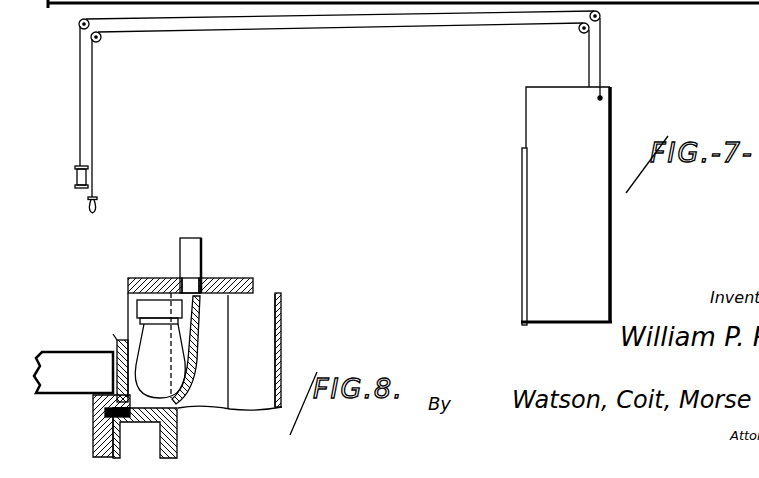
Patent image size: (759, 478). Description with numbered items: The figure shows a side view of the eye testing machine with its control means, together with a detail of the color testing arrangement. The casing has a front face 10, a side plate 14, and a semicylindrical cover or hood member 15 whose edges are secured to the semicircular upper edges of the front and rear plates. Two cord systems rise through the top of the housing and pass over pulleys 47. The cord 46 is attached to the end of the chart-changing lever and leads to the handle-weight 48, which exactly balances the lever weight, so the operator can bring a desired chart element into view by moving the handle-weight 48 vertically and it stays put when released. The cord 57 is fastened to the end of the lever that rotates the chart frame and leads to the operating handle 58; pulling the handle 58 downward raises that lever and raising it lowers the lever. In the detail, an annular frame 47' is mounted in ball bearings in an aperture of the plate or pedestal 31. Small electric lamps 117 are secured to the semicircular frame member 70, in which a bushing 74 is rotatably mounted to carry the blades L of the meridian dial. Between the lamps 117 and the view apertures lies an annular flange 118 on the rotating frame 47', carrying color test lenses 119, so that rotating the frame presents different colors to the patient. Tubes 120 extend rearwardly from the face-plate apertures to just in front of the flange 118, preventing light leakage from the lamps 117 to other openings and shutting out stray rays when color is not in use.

In FIG. 7, the cord 57 is at (325, 31).
In FIG. 7, the handle-weight 48 is at (73, 178).
In FIG. 7, the operating handle 58 is at (99, 203).
In FIG. 7, the pulleys 47 is at (612, 20).
In FIG. 7, the cord 46 is at (601, 57).
In FIG. 7, the semicylindrical cover or hood member 15 is at (540, 110).
In FIG. 7, the side plate 14 is at (598, 258).
In FIG. 7, the front face 10 is at (518, 180).
In FIG. 8, the blades L is at (202, 246).
In FIG. 8, the semicircular frame member 70 is at (245, 280).
In FIG. 8, the bushing 74 is at (188, 274).
In FIG. 8, the electric lamps 117 is at (176, 368).
In FIG. 8, the annular flange 118 is at (120, 343).
In FIG. 8, the tubes 120 is at (50, 376).
In FIG. 8, the color test lenses 119 is at (117, 358).
In FIG. 8, the annular frame 47' is at (86, 426).
In FIG. 8, the plate or pedestal 31 is at (178, 430).